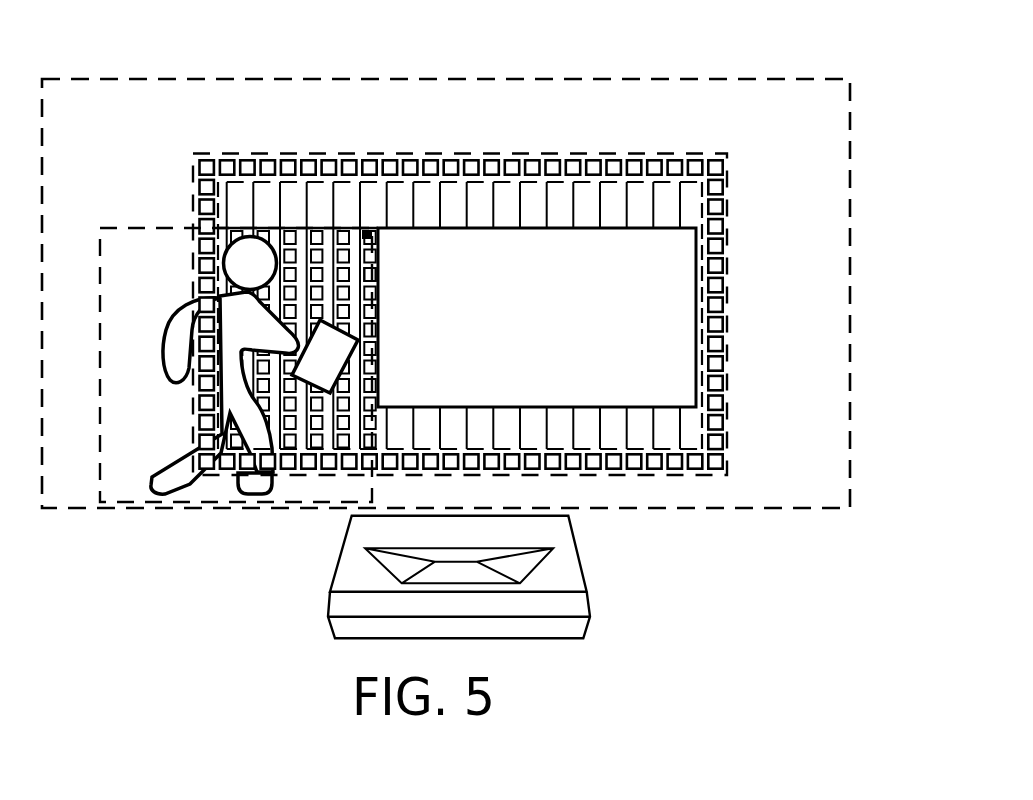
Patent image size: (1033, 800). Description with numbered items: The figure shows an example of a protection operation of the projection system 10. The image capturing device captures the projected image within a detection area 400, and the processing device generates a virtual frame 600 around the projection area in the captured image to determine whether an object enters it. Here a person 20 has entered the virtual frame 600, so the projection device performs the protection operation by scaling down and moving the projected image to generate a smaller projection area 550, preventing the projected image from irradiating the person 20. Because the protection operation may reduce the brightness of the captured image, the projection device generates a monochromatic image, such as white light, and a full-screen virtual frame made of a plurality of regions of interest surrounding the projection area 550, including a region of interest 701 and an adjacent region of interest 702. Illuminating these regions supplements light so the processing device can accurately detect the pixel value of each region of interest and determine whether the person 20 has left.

The projection system 10 is at (570, 573).
The person 20 is at (183, 327).
The detection area 400 is at (782, 77).
The projection area 550 is at (543, 348).
The virtual frame 600 is at (429, 296).
The region of interest 701 is at (371, 270).
The region of interest 702 is at (370, 291).